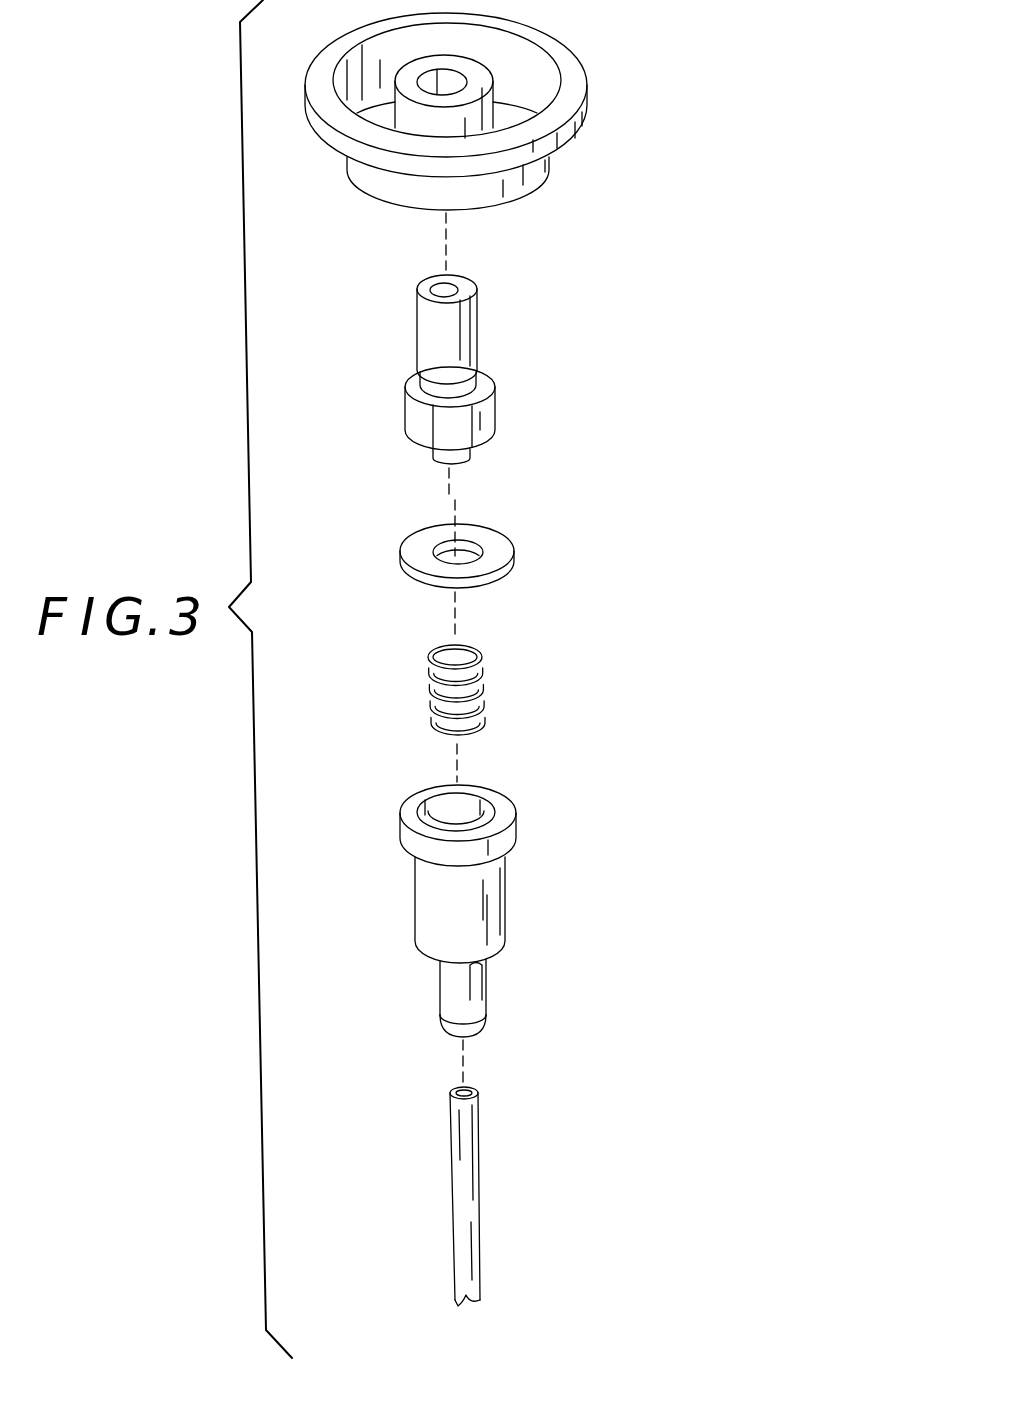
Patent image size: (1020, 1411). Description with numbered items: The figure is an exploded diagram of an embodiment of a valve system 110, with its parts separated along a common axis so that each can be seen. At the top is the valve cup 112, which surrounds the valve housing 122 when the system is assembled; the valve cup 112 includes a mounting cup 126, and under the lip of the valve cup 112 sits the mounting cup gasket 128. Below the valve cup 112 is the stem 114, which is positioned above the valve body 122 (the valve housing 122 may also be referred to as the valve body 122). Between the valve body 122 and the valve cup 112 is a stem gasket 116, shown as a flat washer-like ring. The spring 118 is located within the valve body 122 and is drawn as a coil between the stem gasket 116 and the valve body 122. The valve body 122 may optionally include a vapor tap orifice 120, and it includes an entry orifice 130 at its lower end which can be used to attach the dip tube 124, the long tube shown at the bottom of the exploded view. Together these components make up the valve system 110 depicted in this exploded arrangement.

The valve system 110 is at (667, 320).
The valve cup 112 is at (620, 153).
The stem 114 is at (485, 405).
The stem gasket 116 is at (497, 557).
The spring 118 is at (483, 697).
The vapor tap orifice 120 is at (477, 910).
The valve housing 122 is at (478, 981).
The dip tube 124 is at (470, 1185).
The mounting cup 126 is at (390, 188).
The mounting cup gasket 128 is at (573, 65).
The entry orifice 130 is at (479, 1040).